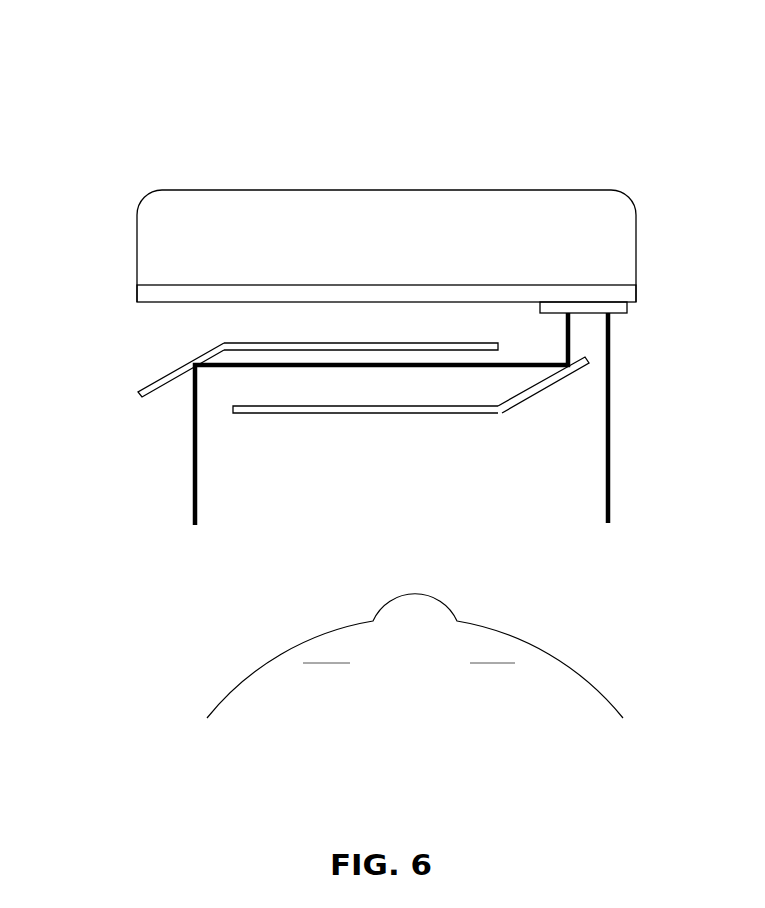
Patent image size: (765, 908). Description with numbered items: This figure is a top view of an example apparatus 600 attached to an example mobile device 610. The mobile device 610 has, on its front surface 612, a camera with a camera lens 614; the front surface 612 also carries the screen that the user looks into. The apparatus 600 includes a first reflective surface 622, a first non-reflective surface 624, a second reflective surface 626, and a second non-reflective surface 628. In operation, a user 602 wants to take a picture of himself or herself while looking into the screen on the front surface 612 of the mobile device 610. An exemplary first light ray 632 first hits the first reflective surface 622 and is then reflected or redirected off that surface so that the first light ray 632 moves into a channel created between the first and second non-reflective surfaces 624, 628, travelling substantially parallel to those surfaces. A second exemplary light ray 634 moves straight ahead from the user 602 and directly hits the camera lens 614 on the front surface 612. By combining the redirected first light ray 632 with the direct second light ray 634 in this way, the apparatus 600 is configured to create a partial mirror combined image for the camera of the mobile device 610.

The apparatus 600 is at (270, 82).
The user 602 is at (276, 718).
The mobile device 610 is at (178, 232).
The front surface 612 is at (152, 300).
The camera lens 614 is at (622, 315).
The first reflective surface 622 is at (173, 380).
The first non-reflective surface 624 is at (402, 343).
The second reflective surface 626 is at (557, 373).
The second non-reflective surface 628 is at (352, 412).
The first light ray 632 is at (195, 484).
The second light ray 634 is at (608, 450).